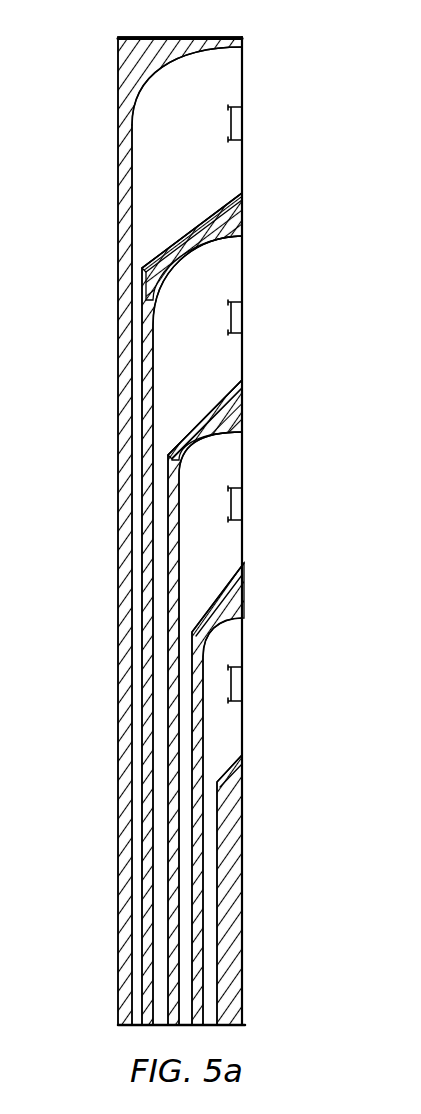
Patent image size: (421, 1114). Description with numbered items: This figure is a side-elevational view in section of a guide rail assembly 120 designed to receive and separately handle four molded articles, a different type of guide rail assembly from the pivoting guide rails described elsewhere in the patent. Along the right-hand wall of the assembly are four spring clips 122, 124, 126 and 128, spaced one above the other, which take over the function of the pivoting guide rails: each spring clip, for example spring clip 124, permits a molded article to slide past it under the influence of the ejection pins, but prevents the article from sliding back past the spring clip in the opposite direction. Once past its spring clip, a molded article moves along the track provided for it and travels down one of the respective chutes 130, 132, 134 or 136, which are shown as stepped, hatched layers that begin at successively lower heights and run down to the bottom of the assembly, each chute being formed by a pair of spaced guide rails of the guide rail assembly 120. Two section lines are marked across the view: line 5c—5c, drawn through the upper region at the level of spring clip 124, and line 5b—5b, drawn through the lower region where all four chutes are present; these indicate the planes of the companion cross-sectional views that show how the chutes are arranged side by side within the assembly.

The guide rail assembly 120 is at (110, 372).
The spring clip 122 is at (238, 123).
The spring clip 124 is at (237, 307).
The spring clip 126 is at (238, 506).
The spring clip 128 is at (238, 683).
The chute 130 is at (140, 283).
The chute 132 is at (166, 489).
The chute 134 is at (189, 653).
The chute 136 is at (211, 809).
The section line 5b— 5b is at (275, 875).
The section line 5c— 5c is at (272, 317).